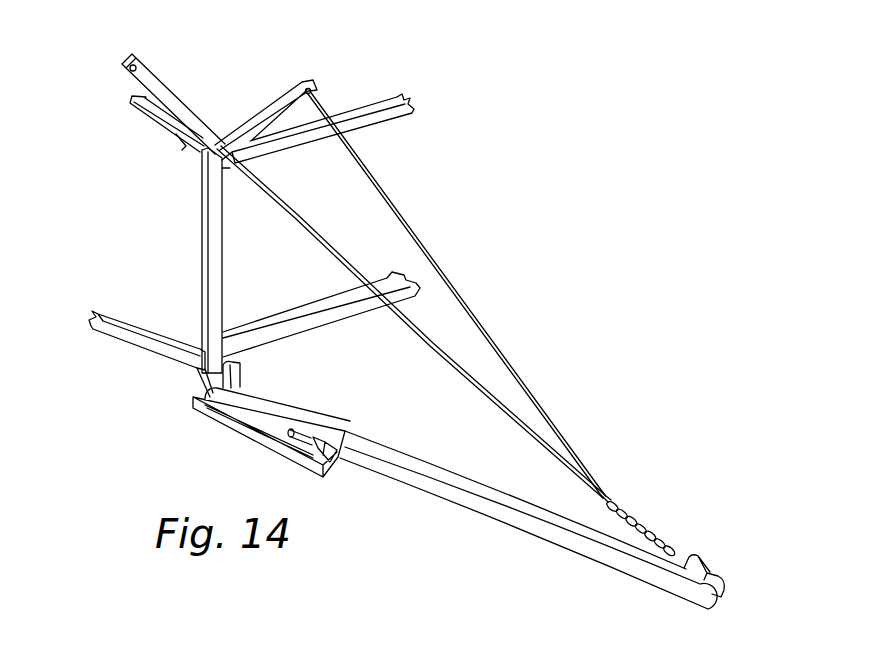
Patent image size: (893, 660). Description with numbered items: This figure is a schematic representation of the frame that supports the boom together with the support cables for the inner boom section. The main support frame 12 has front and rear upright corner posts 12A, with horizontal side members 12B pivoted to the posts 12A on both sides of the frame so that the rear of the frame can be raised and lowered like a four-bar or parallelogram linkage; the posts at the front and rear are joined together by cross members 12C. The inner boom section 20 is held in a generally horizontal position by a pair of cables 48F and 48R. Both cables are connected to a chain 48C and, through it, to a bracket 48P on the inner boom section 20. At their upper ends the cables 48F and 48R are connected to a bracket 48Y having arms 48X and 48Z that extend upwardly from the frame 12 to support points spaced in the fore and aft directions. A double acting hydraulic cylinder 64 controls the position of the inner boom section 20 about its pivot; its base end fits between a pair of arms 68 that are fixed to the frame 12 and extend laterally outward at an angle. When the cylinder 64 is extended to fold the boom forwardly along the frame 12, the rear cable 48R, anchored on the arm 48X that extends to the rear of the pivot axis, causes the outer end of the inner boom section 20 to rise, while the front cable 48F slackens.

The main support frame 12 is at (366, 104).
The upright corner post 12A is at (206, 219).
The horizontal side member 12B is at (306, 323).
The cross member 12C is at (134, 114).
The inner boom section 20 is at (453, 490).
The chain 48C is at (624, 508).
The front cable 48F is at (434, 262).
The bracket 48P is at (702, 560).
The rear cable 48R is at (301, 222).
The arm 48X is at (151, 78).
The bracket 48Y is at (178, 135).
The arm 48Z is at (289, 100).
The hydraulic cylinder 64 is at (248, 410).
The arm 68 is at (200, 392).